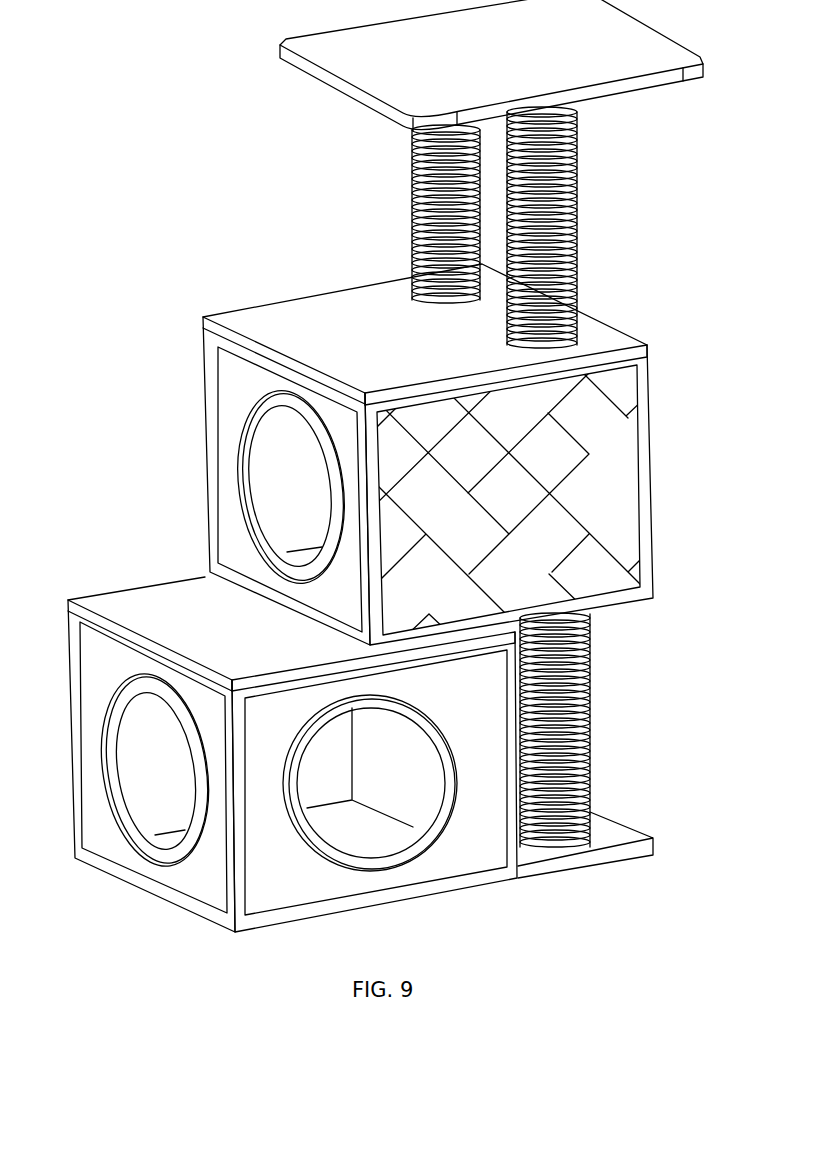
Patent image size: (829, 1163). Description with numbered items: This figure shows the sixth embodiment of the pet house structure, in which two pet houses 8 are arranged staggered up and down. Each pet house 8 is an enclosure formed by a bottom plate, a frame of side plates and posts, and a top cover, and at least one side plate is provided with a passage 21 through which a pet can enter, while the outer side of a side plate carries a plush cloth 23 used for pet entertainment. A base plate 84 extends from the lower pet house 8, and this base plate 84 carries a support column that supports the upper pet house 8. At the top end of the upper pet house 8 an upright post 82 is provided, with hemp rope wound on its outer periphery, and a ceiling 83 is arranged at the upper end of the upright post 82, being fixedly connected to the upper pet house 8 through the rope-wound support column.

The pet house 8 is at (313, 338).
The passage 21 is at (287, 468).
The plush cloth 23 is at (595, 503).
The upright post 82 is at (560, 183).
The ceiling 83 is at (548, 48).
The base plate 84 is at (533, 858).